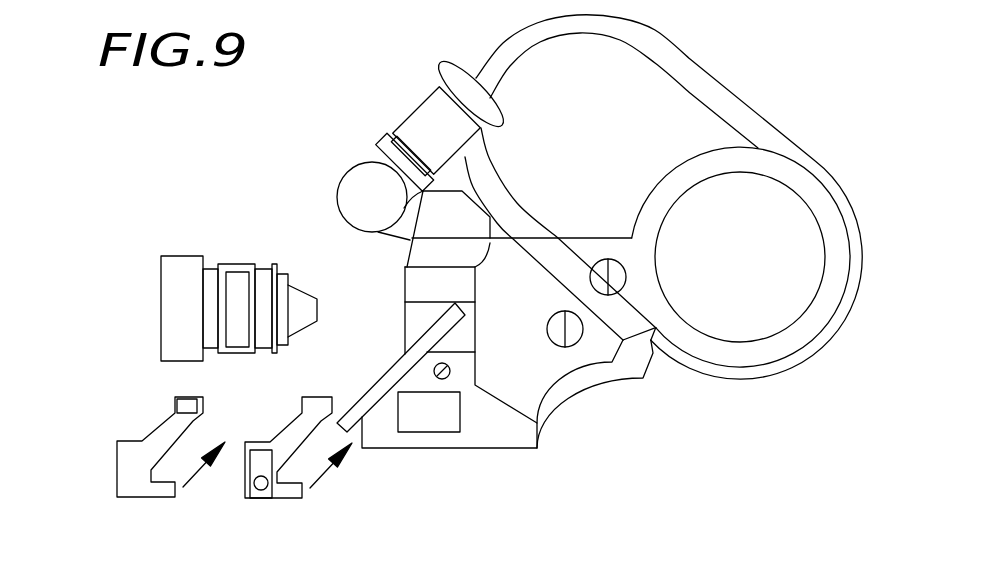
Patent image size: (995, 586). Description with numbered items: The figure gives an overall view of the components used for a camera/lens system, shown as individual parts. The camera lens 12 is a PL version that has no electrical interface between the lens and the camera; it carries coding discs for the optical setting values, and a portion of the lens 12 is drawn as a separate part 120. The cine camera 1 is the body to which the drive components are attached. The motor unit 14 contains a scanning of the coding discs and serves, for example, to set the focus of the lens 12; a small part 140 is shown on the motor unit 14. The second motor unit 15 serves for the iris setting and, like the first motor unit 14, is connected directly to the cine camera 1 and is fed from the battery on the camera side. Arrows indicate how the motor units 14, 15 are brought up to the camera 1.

The cine camera 1 is at (728, 93).
The camera lens 12 is at (233, 264).
The pin head 120 is at (281, 273).
The motor unit 14 is at (148, 497).
The latch tab 140 is at (174, 405).
The second motor unit 15 is at (283, 498).